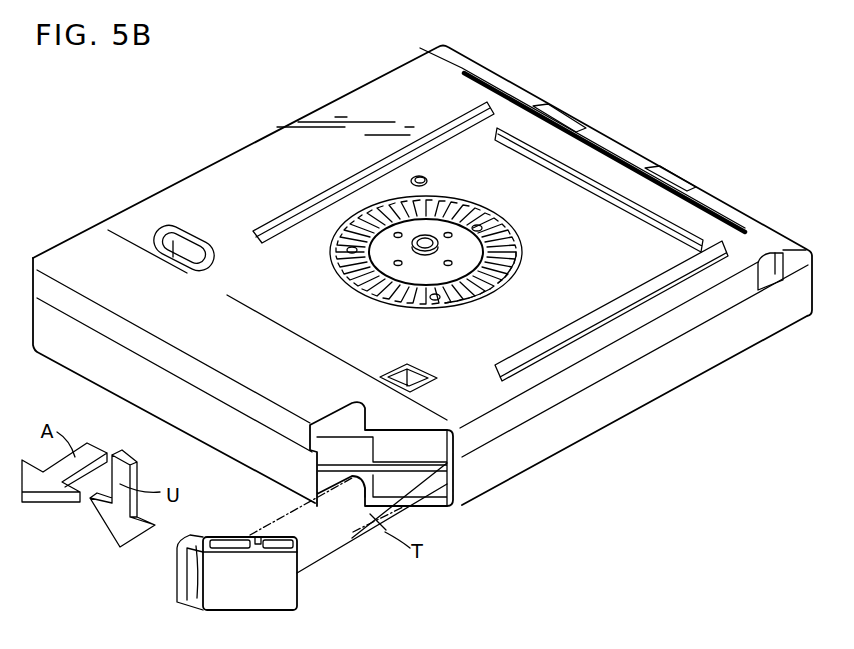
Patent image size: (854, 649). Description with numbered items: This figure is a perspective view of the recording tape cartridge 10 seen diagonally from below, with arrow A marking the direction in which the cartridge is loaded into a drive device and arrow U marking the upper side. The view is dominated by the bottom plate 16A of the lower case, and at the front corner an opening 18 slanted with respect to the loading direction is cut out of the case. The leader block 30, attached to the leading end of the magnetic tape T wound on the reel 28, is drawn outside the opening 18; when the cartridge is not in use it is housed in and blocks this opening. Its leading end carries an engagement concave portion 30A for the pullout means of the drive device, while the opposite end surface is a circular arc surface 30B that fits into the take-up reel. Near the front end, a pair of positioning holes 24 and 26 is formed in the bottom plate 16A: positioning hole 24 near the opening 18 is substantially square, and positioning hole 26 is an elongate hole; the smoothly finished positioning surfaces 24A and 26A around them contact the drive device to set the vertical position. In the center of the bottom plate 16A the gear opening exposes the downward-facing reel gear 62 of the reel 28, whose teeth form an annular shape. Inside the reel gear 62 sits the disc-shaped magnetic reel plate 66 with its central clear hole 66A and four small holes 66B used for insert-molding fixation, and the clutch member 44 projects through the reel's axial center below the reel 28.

The recording tape cartridge 10 is at (244, 102).
The bottom plate 16A is at (577, 198).
The opening 18 is at (338, 428).
The positioning hole 24 is at (415, 372).
The positioning surface 24A is at (397, 370).
The positioning hole 26 is at (184, 243).
The positioning surface 26A is at (160, 238).
The reel 28 is at (527, 252).
The leader block 30 is at (314, 599).
The engagement concave portion 30A is at (178, 566).
The circular arc surface 30B is at (298, 578).
The clutch member 44 is at (416, 247).
The reel gear 62 is at (451, 210).
The reel plate 66 is at (466, 240).
The clear hole 66A is at (496, 266).
The small holes 66B is at (466, 300).